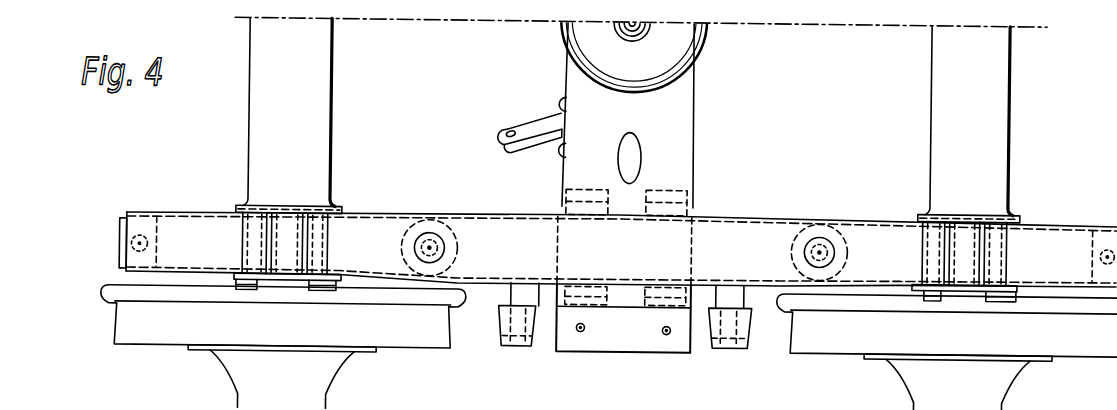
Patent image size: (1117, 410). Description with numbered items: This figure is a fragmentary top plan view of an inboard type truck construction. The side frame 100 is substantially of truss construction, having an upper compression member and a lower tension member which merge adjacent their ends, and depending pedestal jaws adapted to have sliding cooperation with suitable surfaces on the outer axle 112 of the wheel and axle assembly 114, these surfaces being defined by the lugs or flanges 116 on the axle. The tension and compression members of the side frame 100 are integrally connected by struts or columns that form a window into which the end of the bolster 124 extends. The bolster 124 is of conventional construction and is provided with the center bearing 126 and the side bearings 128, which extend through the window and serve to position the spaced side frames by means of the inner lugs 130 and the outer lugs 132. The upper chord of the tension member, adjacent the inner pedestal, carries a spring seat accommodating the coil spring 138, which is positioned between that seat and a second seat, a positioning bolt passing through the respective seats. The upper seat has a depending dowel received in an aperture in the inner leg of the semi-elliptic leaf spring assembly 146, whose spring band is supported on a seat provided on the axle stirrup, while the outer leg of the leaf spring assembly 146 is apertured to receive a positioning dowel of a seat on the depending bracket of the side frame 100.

The side frame 100 is at (738, 222).
The outer axle 112 is at (322, 94).
The wheel and axle assembly 114 is at (153, 346).
The lugs or flanges 116 is at (338, 213).
The bolster 124 is at (675, 127).
The center bearing 126 is at (673, 51).
The side bearings 128 is at (589, 342).
The inner lugs 130 is at (604, 207).
The outer lugs 132 is at (655, 296).
The coil spring 138 is at (433, 226).
The semi-elliptic leaf spring assembly 146 is at (183, 237).